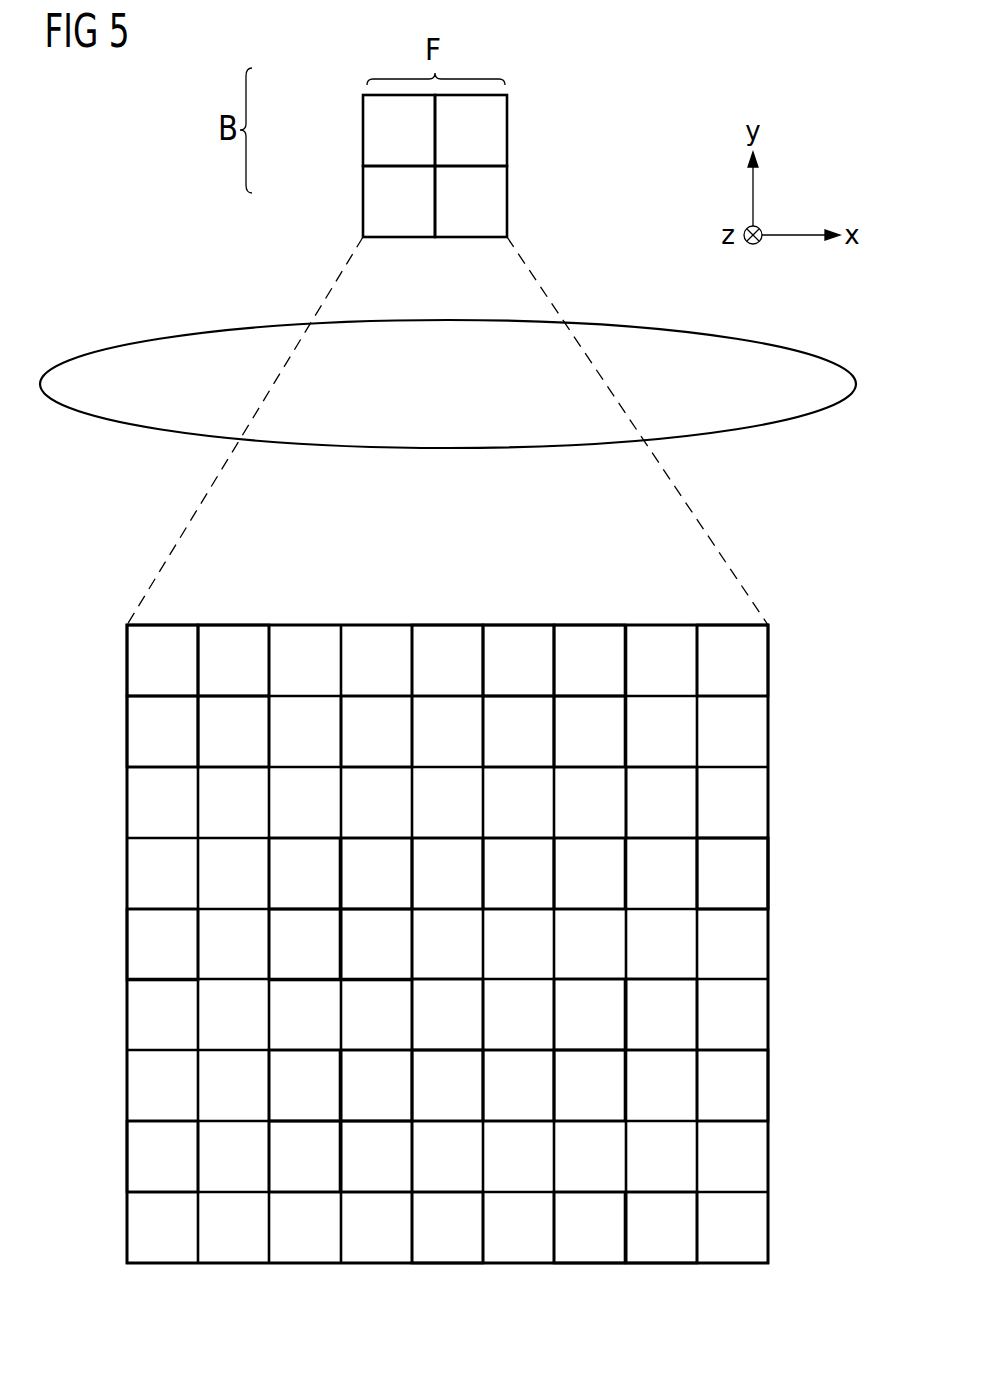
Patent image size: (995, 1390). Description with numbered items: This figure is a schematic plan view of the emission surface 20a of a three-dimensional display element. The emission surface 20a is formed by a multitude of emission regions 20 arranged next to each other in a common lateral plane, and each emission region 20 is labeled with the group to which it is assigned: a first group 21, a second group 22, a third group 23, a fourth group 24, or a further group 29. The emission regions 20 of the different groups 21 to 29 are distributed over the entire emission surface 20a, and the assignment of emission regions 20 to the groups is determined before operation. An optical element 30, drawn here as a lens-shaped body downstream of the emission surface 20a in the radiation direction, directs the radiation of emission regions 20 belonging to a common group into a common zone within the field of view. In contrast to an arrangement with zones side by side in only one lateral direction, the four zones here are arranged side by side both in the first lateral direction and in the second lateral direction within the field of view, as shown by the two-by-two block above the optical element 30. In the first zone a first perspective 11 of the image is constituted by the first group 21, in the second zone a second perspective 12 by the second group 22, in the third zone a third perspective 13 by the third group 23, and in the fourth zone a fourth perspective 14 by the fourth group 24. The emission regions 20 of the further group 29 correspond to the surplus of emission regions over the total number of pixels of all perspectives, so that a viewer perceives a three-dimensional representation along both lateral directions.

The first perspective 11 is at (413, 102).
The second perspective 12 is at (445, 120).
The third perspective 13 is at (413, 173).
The fourth perspective 14 is at (445, 187).
The emission regions 20 is at (773, 679).
The emission surface 20a is at (766, 851).
The optical element 30 is at (820, 373).
The first group 21 is at (376, 873).
The second group 22 is at (483, 873).
The third group 23 is at (376, 979).
The fourth group 24 is at (447, 979).
The further group 29 is at (447, 944).